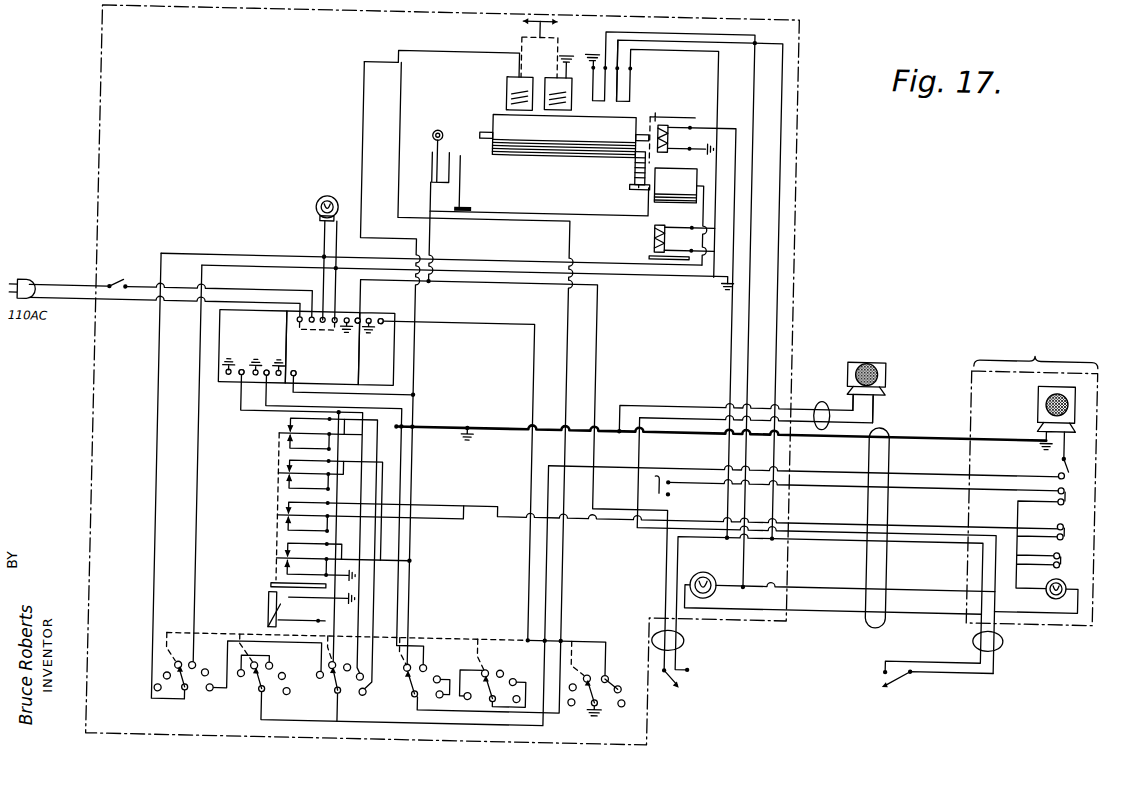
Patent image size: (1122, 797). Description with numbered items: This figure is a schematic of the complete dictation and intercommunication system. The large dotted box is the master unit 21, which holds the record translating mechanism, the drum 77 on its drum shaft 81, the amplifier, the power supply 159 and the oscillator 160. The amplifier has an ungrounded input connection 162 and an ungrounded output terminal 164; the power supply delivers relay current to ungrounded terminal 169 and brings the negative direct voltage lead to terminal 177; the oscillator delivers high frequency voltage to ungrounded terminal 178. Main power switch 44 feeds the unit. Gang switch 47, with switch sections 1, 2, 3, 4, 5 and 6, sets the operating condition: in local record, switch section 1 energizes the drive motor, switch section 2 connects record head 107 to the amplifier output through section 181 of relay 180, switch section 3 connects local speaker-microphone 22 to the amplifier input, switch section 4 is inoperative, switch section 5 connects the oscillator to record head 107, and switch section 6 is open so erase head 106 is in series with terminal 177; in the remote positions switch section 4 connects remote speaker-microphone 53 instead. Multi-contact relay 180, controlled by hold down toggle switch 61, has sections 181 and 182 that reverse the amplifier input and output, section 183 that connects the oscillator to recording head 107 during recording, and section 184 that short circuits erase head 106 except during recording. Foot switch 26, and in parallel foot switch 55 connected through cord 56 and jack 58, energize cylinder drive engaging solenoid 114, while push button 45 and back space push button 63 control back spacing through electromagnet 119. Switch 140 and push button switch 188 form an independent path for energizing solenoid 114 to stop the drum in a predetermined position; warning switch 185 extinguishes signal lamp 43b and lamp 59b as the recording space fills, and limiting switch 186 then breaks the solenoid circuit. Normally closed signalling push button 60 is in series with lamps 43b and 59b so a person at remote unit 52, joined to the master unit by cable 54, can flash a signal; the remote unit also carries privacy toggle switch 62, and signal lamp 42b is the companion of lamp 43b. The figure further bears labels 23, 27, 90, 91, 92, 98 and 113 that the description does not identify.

The switch section 1 is at (217, 746).
The switch section 2 is at (290, 747).
The switch section 3 is at (370, 747).
The switch section 4 is at (447, 748).
The switch section 5 is at (524, 748).
The switch section 6 is at (630, 749).
The master unit 21 is at (443, 376).
The local speaker-microphone 22 is at (847, 349).
The cable 23 is at (822, 397).
The foot switch 26 is at (696, 668).
The cable 27 is at (689, 638).
The signal lamp 42b is at (315, 207).
The signal lamp 43b is at (708, 568).
The main power switch 44 is at (110, 292).
The push button 45 is at (660, 476).
The multi-position gang switch 47 is at (232, 639).
The remote unit 52 is at (1030, 483).
The remote speaker-microphone 53 is at (1038, 392).
The multi-conductor cable 54 is at (889, 564).
The foot switch 55 is at (906, 672).
The cord 56 is at (978, 634).
The jack 58 is at (252, 346).
The lamp 59b is at (1067, 572).
The signalling push button 60 is at (1066, 548).
The hold down talk-listen toggle switch 61 is at (1071, 521).
The privacy toggle switch 62 is at (1069, 463).
The back space push button 63 is at (1071, 487).
The drum 77 is at (541, 159).
The drum shaft 81 is at (477, 143).
The contact base 90 is at (646, 189).
The contact 91 is at (631, 177).
The contact 92 is at (630, 165).
The relay 98 is at (675, 185).
The erase head 106 is at (500, 92).
The record head 107 is at (565, 100).
The switch arm 113 is at (651, 115).
The cylinder drive engaging solenoid 114 is at (669, 134).
The electromagnet 119 is at (651, 237).
The switch 140 is at (427, 168).
The power supply 159 is at (322, 348).
The oscillator 160 is at (376, 333).
The ungrounded input connection 162 is at (240, 394).
The ungrounded output terminal 164 is at (266, 394).
The ungrounded terminal 169 is at (356, 321).
The terminal 177 is at (306, 367).
The ungrounded terminal 178 is at (380, 321).
The multi-contact relay 180 is at (270, 603).
The relay section 181 is at (264, 426).
The relay section 182 is at (264, 495).
The relay section 183 is at (264, 537).
The relay section 184 is at (264, 580).
The warning switch 185 is at (582, 77).
The limiting switch 186 is at (613, 97).
The push button switch 188 is at (462, 211).